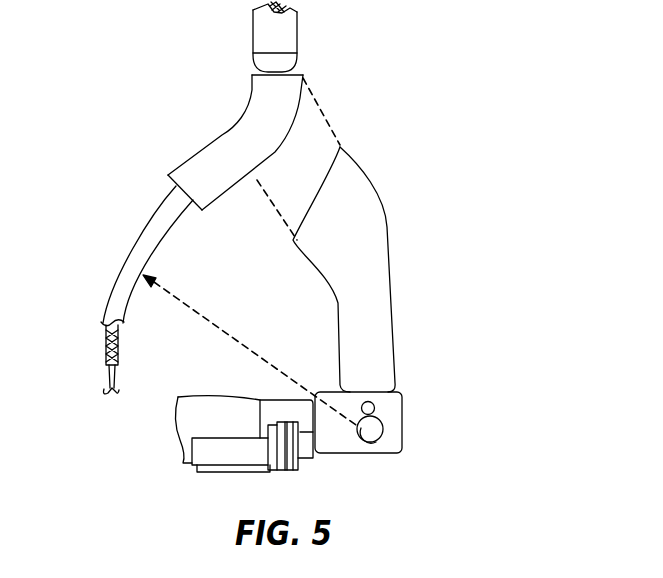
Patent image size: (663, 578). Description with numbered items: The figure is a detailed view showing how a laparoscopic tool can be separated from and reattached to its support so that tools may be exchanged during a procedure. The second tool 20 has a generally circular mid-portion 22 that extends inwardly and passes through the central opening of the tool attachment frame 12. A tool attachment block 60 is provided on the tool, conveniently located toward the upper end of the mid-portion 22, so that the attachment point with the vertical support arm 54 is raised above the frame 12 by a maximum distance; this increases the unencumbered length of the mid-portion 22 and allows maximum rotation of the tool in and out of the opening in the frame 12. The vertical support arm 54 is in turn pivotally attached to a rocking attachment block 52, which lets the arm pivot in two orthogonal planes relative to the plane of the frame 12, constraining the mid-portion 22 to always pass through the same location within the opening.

The tool attachment frame 12 is at (184, 460).
The second tool 20 is at (318, 76).
The mid-portion 22 is at (120, 302).
The rocking attachment block 52 is at (388, 445).
The vertical support arm 54 is at (375, 268).
The tool attachment block 60 is at (231, 147).